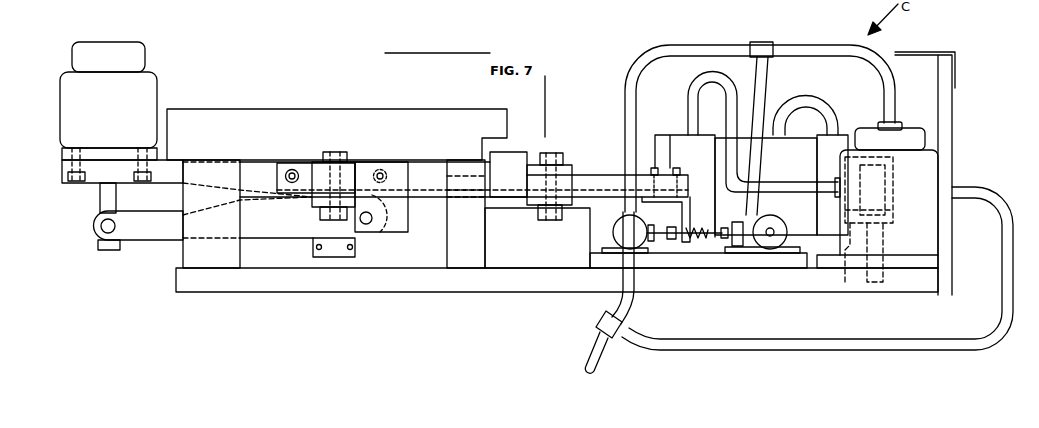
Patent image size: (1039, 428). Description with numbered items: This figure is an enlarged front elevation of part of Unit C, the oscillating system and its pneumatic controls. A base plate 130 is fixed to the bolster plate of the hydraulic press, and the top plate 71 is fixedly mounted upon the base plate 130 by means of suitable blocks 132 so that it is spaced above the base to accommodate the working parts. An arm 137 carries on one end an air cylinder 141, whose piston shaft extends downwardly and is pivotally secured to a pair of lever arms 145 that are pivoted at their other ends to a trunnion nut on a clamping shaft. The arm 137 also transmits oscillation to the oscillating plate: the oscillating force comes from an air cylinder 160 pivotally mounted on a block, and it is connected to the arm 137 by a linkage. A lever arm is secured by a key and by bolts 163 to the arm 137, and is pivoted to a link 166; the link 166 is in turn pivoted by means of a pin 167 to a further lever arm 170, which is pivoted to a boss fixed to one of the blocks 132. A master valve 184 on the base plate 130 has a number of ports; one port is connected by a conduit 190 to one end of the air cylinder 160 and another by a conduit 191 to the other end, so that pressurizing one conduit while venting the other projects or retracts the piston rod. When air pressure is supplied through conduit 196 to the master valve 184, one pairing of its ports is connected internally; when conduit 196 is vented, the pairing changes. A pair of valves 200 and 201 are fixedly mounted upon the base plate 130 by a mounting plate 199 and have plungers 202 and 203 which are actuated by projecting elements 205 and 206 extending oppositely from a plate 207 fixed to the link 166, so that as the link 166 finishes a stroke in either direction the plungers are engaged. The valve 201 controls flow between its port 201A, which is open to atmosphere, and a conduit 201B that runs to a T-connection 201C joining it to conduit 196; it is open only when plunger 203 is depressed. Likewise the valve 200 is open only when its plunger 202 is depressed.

The top plate 71 is at (215, 118).
The base plate 130 is at (470, 284).
The blocks 132 is at (224, 261).
The arm 137 is at (95, 177).
The air cylinder 141 is at (120, 111).
The lever arms 145 is at (167, 229).
The air cylinder 160 is at (800, 221).
The bolts 163 is at (292, 169).
The link 166 is at (508, 180).
The pin 167 is at (555, 165).
The lever arm 170 is at (575, 173).
The master valve 184 is at (928, 146).
The conduit 190 is at (826, 95).
The conduit 191 is at (688, 103).
The conduit 196 is at (890, 102).
The mounting plate 199 is at (703, 268).
The valve 200 is at (608, 226).
The valve 201 is at (754, 241).
The port 201A is at (774, 234).
The conduit 201B is at (752, 216).
The T-connection 201C is at (762, 44).
The plunger 202 is at (657, 248).
The plunger 203 is at (726, 240).
The projecting element 205 is at (668, 240).
The projecting element 206 is at (697, 240).
The plate 207 is at (692, 205).